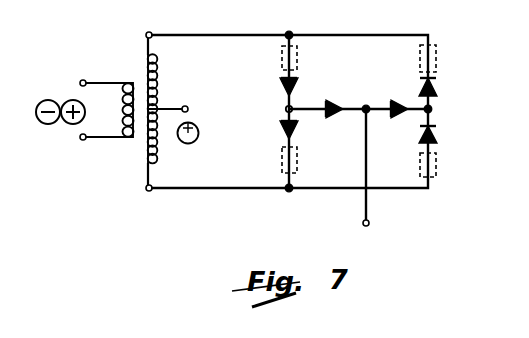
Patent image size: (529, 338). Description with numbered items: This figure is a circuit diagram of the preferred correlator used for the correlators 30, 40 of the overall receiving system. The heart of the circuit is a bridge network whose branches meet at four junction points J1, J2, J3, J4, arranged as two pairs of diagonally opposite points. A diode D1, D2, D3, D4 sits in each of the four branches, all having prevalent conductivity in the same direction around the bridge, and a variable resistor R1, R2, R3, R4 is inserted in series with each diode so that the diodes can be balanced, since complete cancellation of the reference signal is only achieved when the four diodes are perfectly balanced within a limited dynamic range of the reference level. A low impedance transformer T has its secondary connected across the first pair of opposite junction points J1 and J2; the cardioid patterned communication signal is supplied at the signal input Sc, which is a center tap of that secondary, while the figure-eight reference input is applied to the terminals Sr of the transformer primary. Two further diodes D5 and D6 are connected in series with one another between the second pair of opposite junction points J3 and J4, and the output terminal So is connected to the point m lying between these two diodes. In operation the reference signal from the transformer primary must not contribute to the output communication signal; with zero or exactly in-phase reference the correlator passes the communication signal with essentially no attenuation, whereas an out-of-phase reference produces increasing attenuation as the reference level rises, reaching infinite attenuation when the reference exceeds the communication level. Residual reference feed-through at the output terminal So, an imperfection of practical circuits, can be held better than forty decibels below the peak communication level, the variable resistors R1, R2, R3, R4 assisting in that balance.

The correlator 30 is at (205, 199).
The correlator 40 is at (203, 201).
The low impedance transformer T is at (128, 77).
The reference input terminals Sr is at (59, 92).
The signal input Sc is at (174, 110).
The output terminal So is at (383, 225).
The junction point J1 is at (277, 22).
The junction point J2 is at (275, 210).
The junction point J3 is at (262, 103).
The junction point J4 is at (443, 114).
The point between diodes m is at (367, 96).
The variable resistor R1 is at (281, 62).
The variable resistor R2 is at (281, 163).
The variable resistor R3 is at (419, 63).
The variable resistor R4 is at (437, 170).
The diode D1 is at (298, 91).
The diode D2 is at (280, 128).
The diode D3 is at (437, 74).
The diode D4 is at (437, 135).
The diode D5 is at (338, 118).
The diode D6 is at (386, 114).